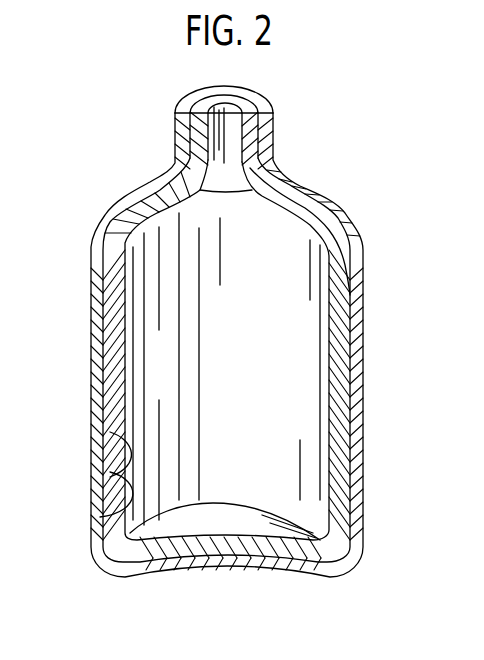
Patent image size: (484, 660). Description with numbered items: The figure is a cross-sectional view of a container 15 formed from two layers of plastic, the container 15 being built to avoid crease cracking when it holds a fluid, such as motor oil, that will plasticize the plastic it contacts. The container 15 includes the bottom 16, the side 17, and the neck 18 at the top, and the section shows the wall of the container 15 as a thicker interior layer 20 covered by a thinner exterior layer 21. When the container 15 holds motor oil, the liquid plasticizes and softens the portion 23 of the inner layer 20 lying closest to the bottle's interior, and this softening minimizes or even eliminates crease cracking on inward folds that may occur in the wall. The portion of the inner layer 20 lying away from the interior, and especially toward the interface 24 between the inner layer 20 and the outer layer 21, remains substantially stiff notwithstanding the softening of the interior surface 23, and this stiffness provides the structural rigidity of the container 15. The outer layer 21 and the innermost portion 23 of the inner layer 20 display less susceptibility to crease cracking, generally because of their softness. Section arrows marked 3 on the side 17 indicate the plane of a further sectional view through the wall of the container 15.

The container 15 is at (338, 180).
The bottom 16 is at (226, 427).
The side 17 is at (340, 428).
The neck 18 is at (255, 133).
The interior layer 20 is at (117, 273).
The exterior layer 21 is at (97, 242).
The interior surface portion 23 is at (122, 512).
The interface 24 is at (110, 473).
The section line 3- 3 is at (47, 338).